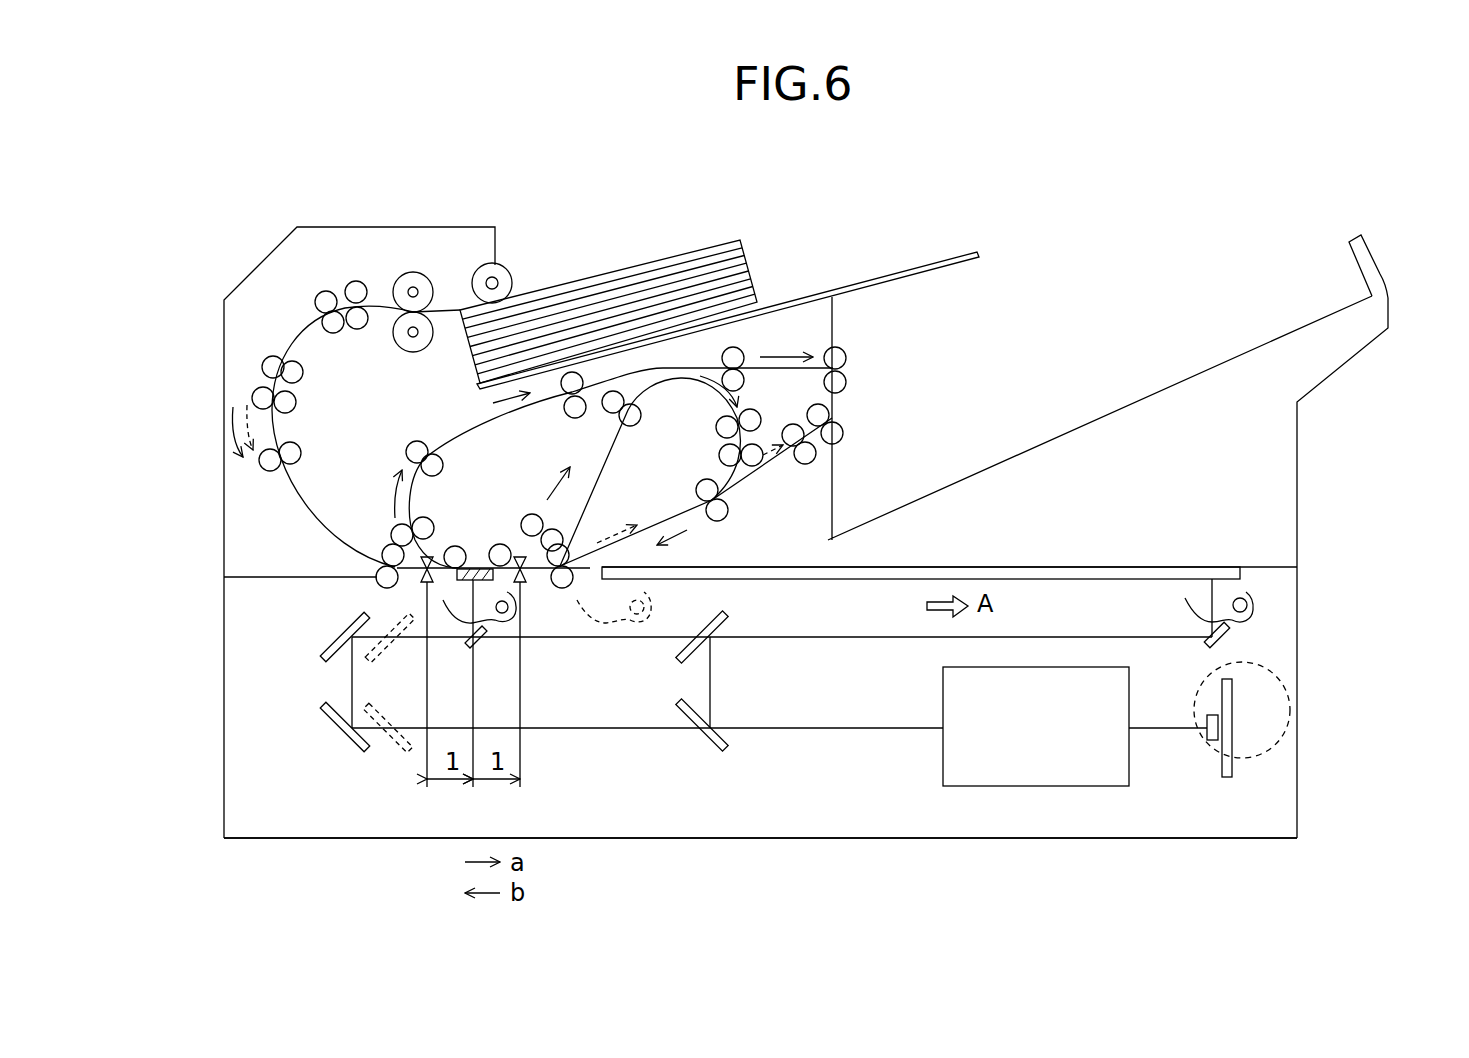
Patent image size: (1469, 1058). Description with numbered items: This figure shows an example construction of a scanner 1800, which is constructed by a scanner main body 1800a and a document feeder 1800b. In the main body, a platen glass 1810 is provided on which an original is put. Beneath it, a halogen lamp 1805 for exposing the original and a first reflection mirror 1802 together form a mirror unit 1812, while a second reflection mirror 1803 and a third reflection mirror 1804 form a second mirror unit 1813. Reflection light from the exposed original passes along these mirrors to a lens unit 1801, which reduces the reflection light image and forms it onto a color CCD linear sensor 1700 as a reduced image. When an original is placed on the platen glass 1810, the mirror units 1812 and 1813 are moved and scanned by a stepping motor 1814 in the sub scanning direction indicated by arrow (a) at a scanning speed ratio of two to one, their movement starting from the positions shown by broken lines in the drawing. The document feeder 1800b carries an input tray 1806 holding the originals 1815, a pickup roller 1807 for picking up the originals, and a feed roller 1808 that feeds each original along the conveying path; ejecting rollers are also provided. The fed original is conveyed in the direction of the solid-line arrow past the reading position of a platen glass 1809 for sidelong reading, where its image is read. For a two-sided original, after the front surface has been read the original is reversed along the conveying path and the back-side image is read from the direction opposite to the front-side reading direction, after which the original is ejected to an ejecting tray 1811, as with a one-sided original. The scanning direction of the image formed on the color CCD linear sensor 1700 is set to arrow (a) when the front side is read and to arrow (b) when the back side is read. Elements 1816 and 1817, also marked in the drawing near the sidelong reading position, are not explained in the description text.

The color CCD linear sensor 1700 is at (1203, 737).
The scanner 1800 is at (760, 561).
The scanner main body 1800a is at (1210, 842).
The document feeder 1800b is at (1305, 483).
The lens unit 1801 is at (1075, 726).
The first reflection mirror 1802 is at (478, 643).
The second reflection mirror 1803 is at (340, 632).
The third reflection mirror 1804 is at (320, 700).
The halogen lamp 1805 is at (507, 622).
The input tray 1806 is at (790, 276).
The pickup roller 1807 is at (498, 263).
The feed roller 1808 is at (413, 270).
The platen glass for sidelong reading 1809 is at (473, 565).
The platen glass 1810 is at (1112, 567).
The ejecting tray 1811 is at (1113, 412).
The mirror unit 1812 is at (605, 667).
The mirror unit 1813 is at (245, 668).
The stepping motor 1814 is at (1283, 686).
The originals 1815 is at (682, 252).
The left nozzle 1816 is at (428, 560).
The right nozzle 1817 is at (520, 583).